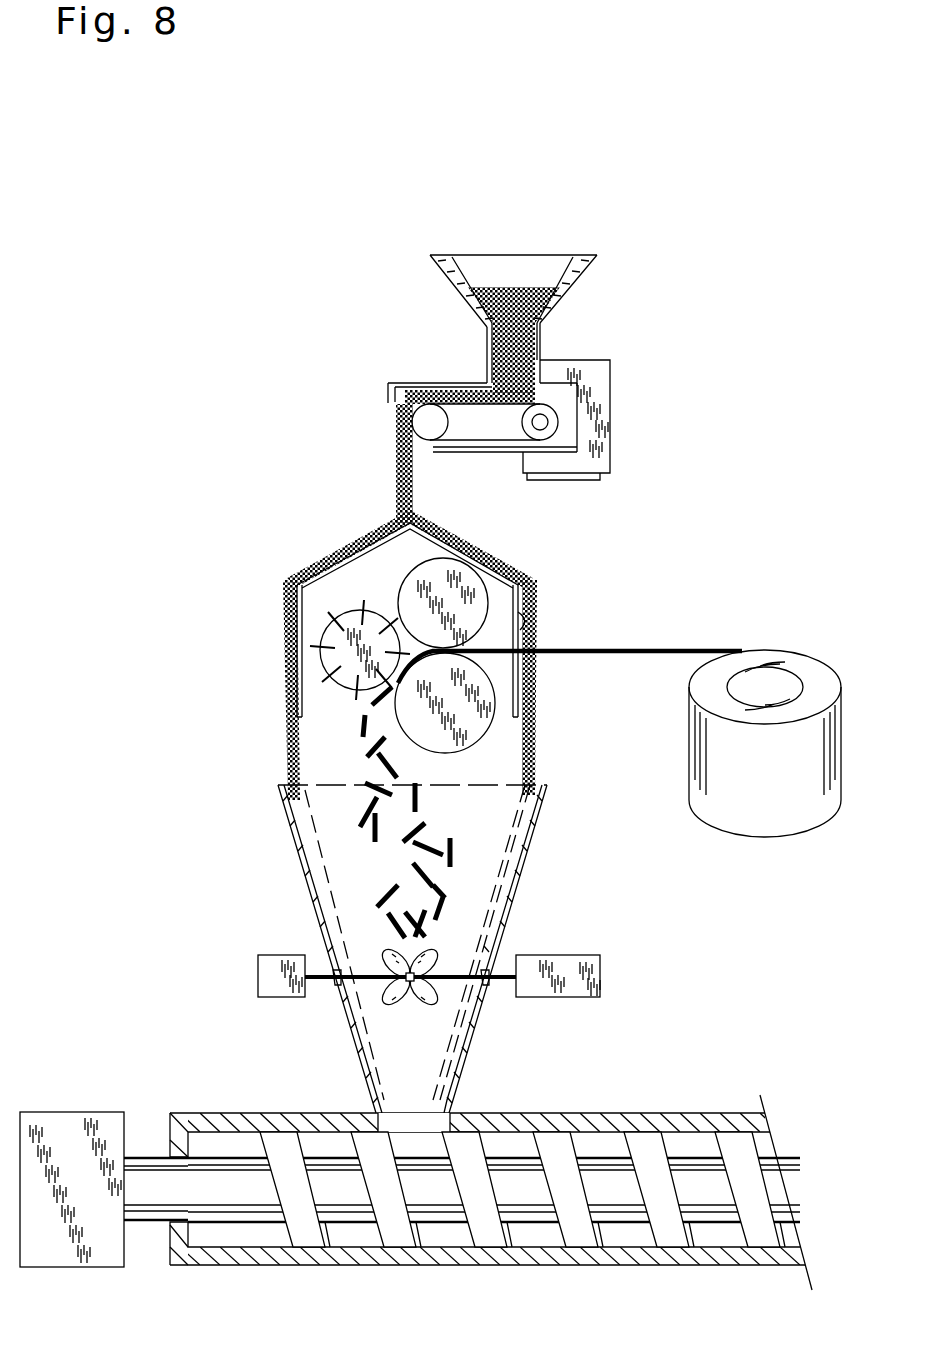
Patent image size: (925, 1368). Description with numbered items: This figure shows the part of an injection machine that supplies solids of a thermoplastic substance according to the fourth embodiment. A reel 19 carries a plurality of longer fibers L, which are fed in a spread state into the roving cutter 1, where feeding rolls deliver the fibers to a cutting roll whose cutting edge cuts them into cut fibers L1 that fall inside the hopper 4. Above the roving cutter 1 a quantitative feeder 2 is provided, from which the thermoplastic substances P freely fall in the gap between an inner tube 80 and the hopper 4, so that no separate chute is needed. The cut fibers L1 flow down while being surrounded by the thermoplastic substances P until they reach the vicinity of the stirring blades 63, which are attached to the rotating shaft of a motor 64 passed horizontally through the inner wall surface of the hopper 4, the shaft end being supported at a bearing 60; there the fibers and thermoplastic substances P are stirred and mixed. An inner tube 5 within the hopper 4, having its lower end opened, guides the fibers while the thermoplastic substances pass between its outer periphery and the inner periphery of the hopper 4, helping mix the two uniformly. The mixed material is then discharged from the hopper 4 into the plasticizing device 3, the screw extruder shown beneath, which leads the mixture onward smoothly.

The roving cutter 1 is at (385, 597).
The quantitative feeder 2 is at (656, 336).
The extruder screw 3 is at (660, 1099).
The hopper 4 is at (303, 887).
The inner tube 5 is at (467, 892).
The reel 19 is at (790, 811).
The bearing 60 is at (490, 994).
The stirring blades 63 is at (397, 1012).
The motor 64 is at (600, 978).
The inner tube 80 is at (520, 630).
The thermoplastic substances P is at (487, 552).
The longer fibers L is at (657, 648).
The cut fibers L1 is at (417, 800).